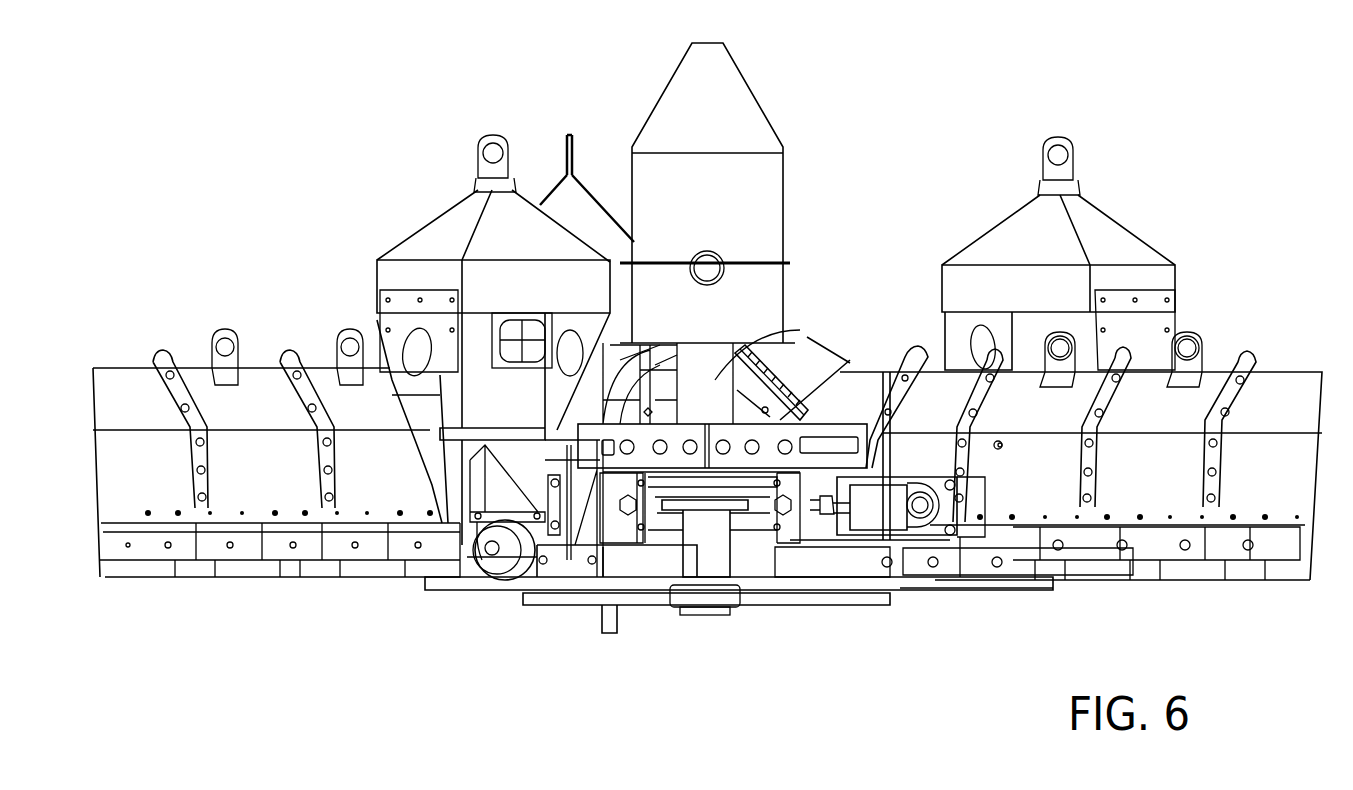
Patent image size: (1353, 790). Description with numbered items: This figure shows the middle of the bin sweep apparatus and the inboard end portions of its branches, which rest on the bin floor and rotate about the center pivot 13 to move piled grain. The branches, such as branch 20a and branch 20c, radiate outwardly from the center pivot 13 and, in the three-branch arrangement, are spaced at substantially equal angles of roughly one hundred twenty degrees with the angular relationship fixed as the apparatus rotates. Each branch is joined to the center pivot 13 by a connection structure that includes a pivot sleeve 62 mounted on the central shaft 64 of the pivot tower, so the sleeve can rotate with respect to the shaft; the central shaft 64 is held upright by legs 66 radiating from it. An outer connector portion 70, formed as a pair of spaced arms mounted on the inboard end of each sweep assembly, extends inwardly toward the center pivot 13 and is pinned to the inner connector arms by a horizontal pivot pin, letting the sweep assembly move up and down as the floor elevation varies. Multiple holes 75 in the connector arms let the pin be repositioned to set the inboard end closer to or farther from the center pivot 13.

The center pivot 13 is at (802, 138).
The branch 20a is at (1278, 395).
The branch 20c is at (258, 380).
The pivot sleeve 62 is at (718, 378).
The outer connector portion 70 is at (768, 440).
The holes 75 is at (786, 444).
The central shaft 64 is at (718, 557).
The legs 66 is at (540, 594).